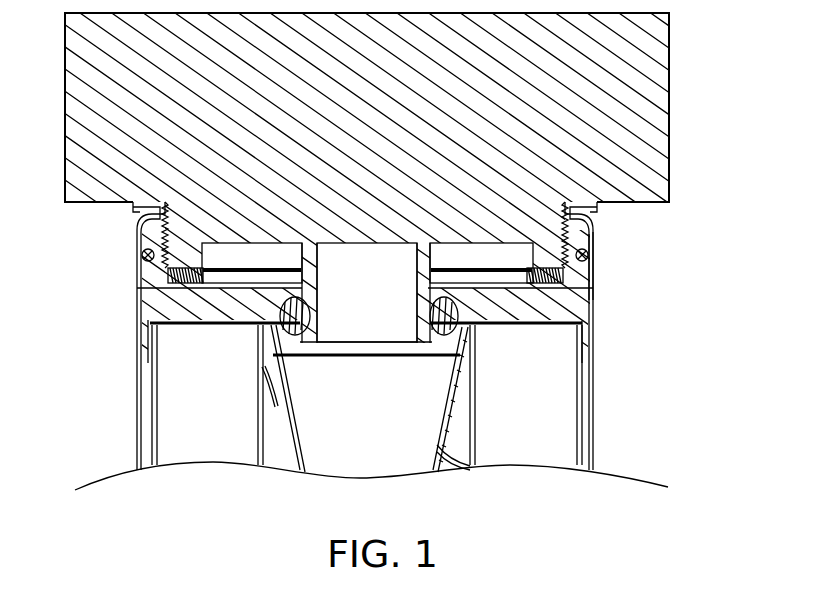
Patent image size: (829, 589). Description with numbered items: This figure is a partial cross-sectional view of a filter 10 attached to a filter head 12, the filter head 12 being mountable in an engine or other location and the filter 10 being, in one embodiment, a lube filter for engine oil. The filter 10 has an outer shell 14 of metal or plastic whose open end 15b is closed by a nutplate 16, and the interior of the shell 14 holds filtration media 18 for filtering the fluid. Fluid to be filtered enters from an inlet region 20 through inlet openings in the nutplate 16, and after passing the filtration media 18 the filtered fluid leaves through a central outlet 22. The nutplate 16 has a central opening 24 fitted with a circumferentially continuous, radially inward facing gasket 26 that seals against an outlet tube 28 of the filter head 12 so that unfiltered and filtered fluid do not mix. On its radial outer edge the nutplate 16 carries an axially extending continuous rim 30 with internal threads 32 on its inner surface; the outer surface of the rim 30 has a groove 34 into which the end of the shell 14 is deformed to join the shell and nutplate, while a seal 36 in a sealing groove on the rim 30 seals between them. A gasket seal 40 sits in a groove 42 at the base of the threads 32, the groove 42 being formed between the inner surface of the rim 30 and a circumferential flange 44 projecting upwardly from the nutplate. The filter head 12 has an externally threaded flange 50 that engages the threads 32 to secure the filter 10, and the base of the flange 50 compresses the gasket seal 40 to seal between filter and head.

The filter 10 is at (599, 358).
The filter head 12 is at (670, 125).
The outer shell 14 is at (136, 407).
The open end 15b is at (137, 247).
The nutplate 16 is at (240, 325).
The filtration media 18 is at (545, 407).
The inlet region 20 is at (138, 288).
The central outlet 22 is at (395, 344).
The central opening 24 is at (305, 300).
The circumferential gasket 26 is at (303, 313).
The outlet tube 28 is at (316, 338).
The rim 30 is at (596, 233).
The internal threads 32 is at (132, 215).
The groove 34 is at (598, 221).
The seal 36 is at (589, 252).
The gasket seal 40 is at (137, 319).
The groove 42 is at (196, 288).
The circumferential flange 44 is at (580, 301).
The externally threaded flange 50 is at (566, 267).